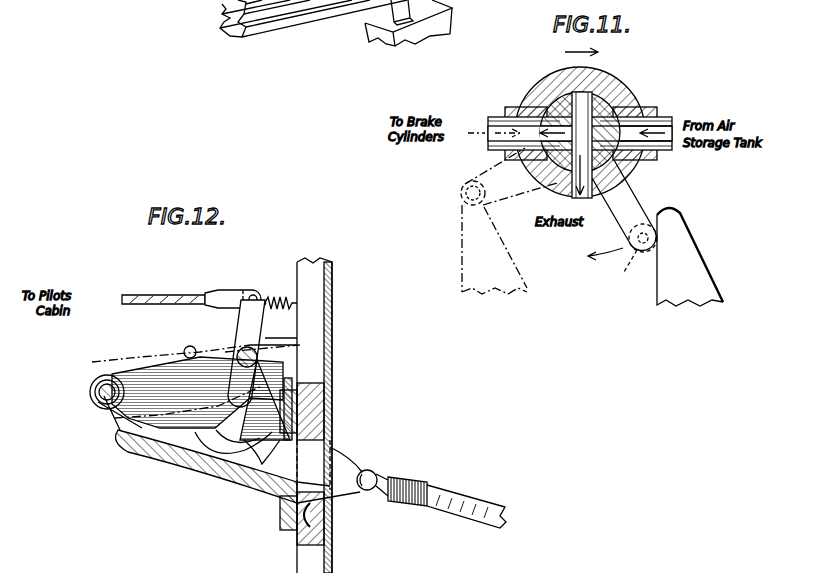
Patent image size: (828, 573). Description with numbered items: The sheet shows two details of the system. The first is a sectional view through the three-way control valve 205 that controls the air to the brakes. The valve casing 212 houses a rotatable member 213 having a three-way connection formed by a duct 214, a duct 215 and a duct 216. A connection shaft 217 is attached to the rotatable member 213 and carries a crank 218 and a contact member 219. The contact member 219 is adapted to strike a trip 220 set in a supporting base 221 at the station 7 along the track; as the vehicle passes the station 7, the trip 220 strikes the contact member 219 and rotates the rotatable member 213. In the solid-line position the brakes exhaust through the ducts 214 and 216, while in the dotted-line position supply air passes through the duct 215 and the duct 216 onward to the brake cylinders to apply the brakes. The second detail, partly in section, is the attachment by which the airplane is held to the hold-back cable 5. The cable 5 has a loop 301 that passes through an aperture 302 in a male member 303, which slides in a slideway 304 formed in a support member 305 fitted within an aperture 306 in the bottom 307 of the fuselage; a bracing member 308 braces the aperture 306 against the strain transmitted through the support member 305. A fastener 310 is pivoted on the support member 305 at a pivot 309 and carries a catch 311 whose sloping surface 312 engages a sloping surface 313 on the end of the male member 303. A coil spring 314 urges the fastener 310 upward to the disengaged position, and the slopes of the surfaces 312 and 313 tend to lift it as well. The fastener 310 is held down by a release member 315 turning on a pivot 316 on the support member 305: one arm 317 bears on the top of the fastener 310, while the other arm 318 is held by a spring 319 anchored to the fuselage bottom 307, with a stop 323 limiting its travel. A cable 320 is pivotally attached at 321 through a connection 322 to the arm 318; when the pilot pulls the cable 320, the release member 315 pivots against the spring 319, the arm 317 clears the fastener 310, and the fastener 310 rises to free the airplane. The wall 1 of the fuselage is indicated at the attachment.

In FIG. 11, the supporting base 221 is at (380, 18).
In FIG. 11, the station 7 is at (454, 18).
In FIG. 11, the valve 205 is at (652, 110).
In FIG. 11, the valve casing 212 is at (628, 92).
In FIG. 11, the rotatable member 213 is at (642, 162).
In FIG. 11, the duct 214 is at (548, 100).
In FIG. 11, the duct 215 is at (604, 86).
In FIG. 11, the duct 216 is at (544, 186).
In FIG. 11, the connection shaft 217 is at (636, 100).
In FIG. 11, the crank 218 is at (642, 202).
In FIG. 11, the contact member 219 is at (612, 267).
In FIG. 11, the trip 220 is at (700, 284).
In FIG. 12, the car wall 1 is at (334, 262).
In FIG. 12, the cable 5 is at (486, 496).
In FIG. 12, the loop 301 is at (385, 474).
In FIG. 12, the aperture 302 is at (372, 470).
In FIG. 12, the male member 303 is at (370, 492).
In FIG. 12, the slideway 304 is at (332, 430).
In FIG. 12, the support member 305 is at (262, 490).
In FIG. 12, the aperture 306 is at (332, 534).
In FIG. 12, the bottom of the fuselage 307 is at (336, 294).
In FIG. 12, the bracing member 308 is at (326, 394).
In FIG. 12, the pivot 309 is at (96, 404).
In FIG. 12, the fastener 310 is at (122, 372).
In FIG. 12, the catch 311 is at (256, 456).
In FIG. 12, the sloping surface 312 is at (222, 450).
In FIG. 12, the sloping surface 313 is at (206, 446).
In FIG. 12, the coil spring 314 is at (112, 420).
In FIG. 12, the release member 315 is at (230, 331).
In FIG. 12, the pivot 316 is at (262, 362).
In FIG. 12, the arm 317 is at (288, 380).
In FIG. 12, the arm 318 is at (262, 334).
In FIG. 12, the spring 319 is at (280, 296).
In FIG. 12, the cable 320 is at (148, 294).
In FIG. 12, the pivotal attachment 321 is at (252, 294).
In FIG. 12, the connection 322 is at (222, 290).
In FIG. 12, the stop 323 is at (186, 350).